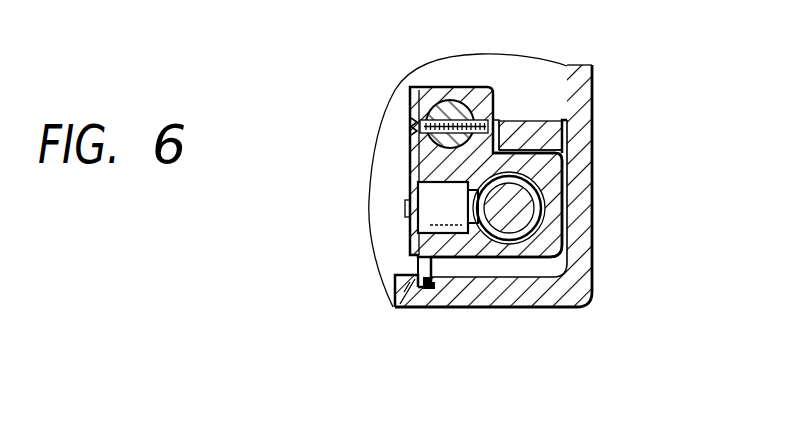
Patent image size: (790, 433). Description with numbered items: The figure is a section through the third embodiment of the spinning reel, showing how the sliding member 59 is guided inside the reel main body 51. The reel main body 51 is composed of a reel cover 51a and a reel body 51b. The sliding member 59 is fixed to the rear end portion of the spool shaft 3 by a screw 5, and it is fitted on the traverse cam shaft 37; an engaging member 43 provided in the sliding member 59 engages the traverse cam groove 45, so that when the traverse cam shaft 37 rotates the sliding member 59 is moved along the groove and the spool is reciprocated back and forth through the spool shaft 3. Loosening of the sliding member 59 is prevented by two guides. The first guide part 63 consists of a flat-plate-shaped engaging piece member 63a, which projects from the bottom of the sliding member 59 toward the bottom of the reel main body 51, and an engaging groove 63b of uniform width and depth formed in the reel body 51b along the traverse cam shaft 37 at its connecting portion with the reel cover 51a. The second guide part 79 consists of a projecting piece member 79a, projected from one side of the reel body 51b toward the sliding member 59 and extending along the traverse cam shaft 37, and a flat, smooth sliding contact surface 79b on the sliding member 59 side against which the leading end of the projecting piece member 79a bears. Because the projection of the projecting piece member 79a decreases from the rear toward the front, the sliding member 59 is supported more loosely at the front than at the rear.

The spool shaft 3 is at (440, 96).
The screw 5 is at (408, 117).
The engaging member 43 is at (425, 192).
The sliding contact surface 79b is at (511, 109).
The reel main body 51 is at (600, 58).
The reel body 51b is at (595, 97).
The second guide part 79 is at (578, 127).
The projecting piece member 79a is at (571, 149).
The traverse cam shaft 37 is at (563, 227).
The traverse cam groove 45 is at (593, 267).
The sliding member 59 is at (518, 256).
The engaging piece member 63a is at (415, 272).
The first guide part 63 is at (398, 286).
The reel cover 51a is at (394, 306).
The engaging groove 63b is at (437, 270).